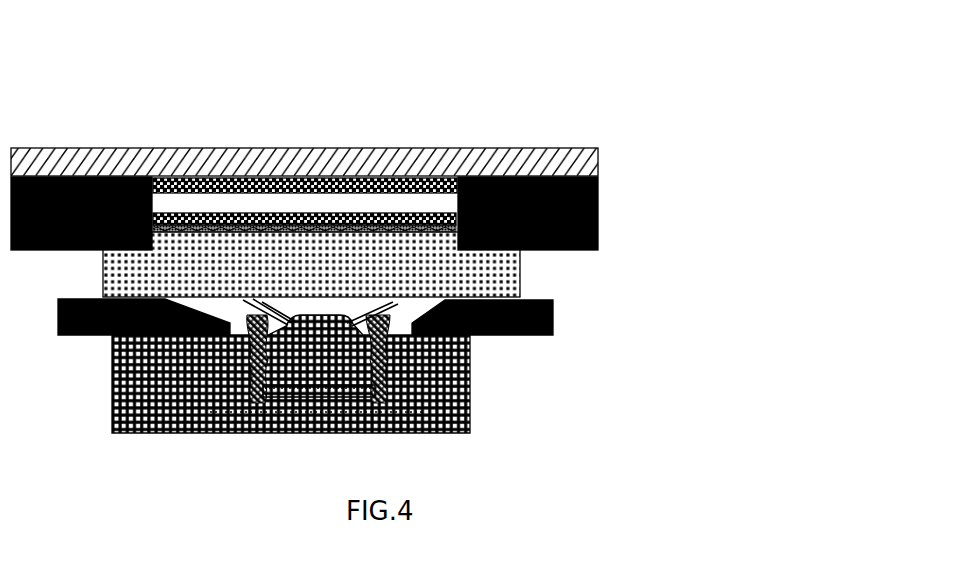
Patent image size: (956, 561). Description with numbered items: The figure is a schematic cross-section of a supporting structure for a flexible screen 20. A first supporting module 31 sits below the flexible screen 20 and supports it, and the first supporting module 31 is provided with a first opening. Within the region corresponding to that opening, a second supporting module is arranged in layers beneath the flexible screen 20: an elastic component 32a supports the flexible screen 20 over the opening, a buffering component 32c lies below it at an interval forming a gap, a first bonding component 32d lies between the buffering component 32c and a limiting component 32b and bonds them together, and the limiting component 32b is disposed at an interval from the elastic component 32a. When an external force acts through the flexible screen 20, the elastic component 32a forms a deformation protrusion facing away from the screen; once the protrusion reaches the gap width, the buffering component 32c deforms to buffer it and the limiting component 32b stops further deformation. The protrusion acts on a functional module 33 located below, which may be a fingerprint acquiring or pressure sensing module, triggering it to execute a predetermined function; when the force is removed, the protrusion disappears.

The flexible screen 20 is at (598, 158).
The first supporting module 31 is at (598, 195).
The elastic component 32a is at (389, 192).
The limiting component 32b is at (520, 278).
The buffering component 32c is at (450, 212).
The first bonding component 32d is at (440, 228).
The functional module 33 is at (472, 393).